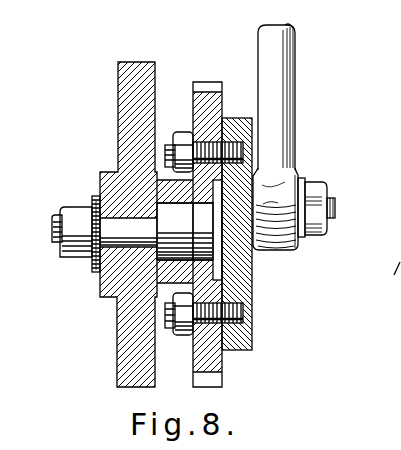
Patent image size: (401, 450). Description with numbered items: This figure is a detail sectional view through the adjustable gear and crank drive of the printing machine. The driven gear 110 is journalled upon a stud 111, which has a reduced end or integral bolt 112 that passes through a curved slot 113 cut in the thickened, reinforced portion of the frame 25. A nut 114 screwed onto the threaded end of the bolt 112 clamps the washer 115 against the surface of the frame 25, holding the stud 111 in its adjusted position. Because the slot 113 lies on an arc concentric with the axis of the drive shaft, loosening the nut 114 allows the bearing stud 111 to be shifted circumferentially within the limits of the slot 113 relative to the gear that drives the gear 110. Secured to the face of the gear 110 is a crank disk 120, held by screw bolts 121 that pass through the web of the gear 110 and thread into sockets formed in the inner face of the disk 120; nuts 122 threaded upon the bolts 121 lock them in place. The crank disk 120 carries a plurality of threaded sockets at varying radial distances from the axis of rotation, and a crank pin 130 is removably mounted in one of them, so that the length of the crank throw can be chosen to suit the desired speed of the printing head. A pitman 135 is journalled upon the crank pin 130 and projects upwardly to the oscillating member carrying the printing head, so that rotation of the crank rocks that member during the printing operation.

The frame 25 is at (125, 93).
The gear 110 is at (207, 87).
The stud 111 is at (156, 231).
The bolt 112 is at (99, 264).
The curved slot 113 is at (128, 222).
The nut 114 is at (60, 256).
The washer 115 is at (96, 266).
The crank disk 120 is at (243, 280).
The screw bolts 121 is at (222, 142).
The nuts 122 is at (178, 132).
The crank pin 130 is at (333, 198).
The pitman 135 is at (295, 75).